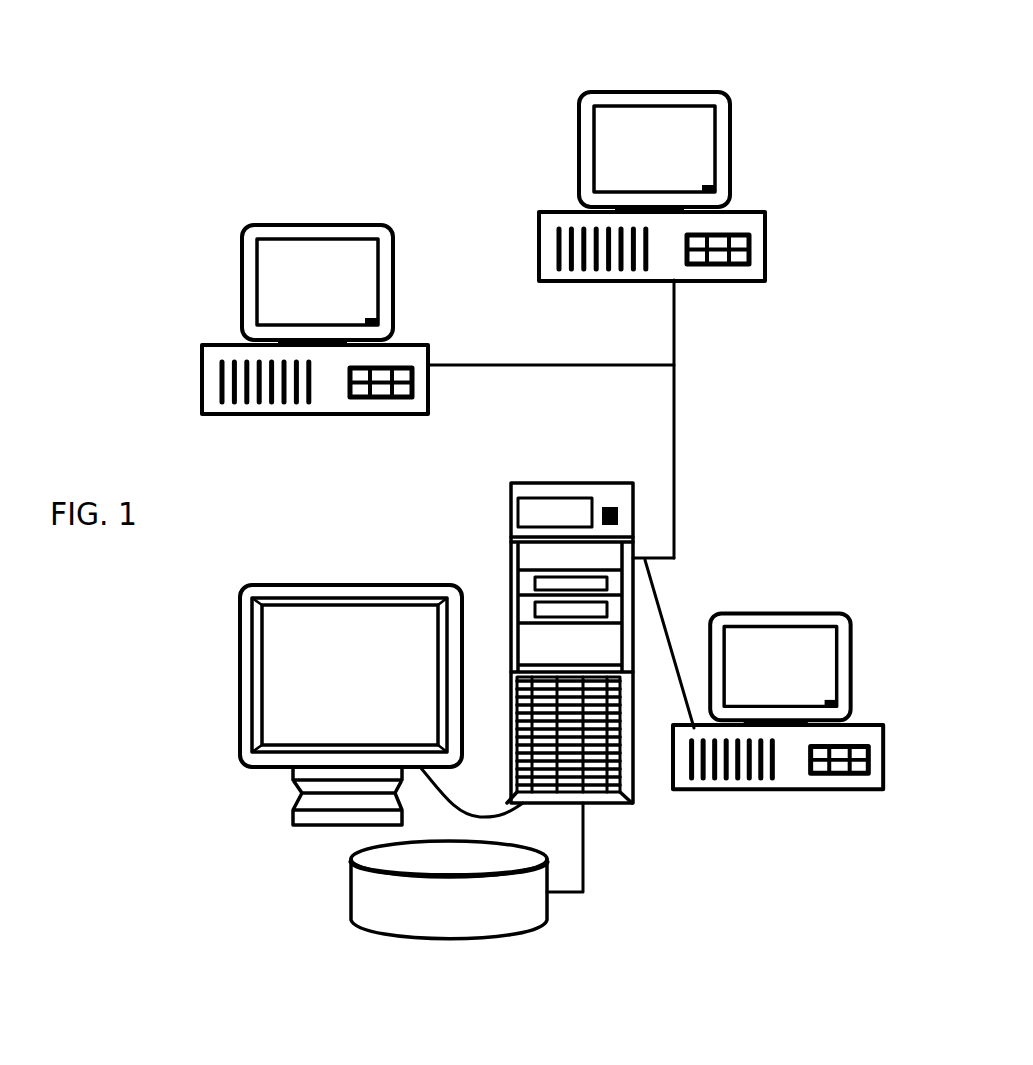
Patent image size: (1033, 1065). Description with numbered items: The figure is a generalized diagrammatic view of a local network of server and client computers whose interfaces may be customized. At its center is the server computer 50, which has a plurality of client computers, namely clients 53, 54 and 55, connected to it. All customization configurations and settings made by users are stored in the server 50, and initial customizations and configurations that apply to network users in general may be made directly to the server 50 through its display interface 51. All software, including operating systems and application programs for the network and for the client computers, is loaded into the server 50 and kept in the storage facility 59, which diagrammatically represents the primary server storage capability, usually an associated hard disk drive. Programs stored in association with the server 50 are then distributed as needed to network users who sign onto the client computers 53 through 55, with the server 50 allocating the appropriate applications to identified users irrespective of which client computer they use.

The server computer 50 is at (510, 503).
The display interface 51 is at (238, 765).
The client computer 53 is at (335, 238).
The client computer 54 is at (647, 97).
The client computer 55 is at (740, 770).
The storage facility 59 is at (443, 908).